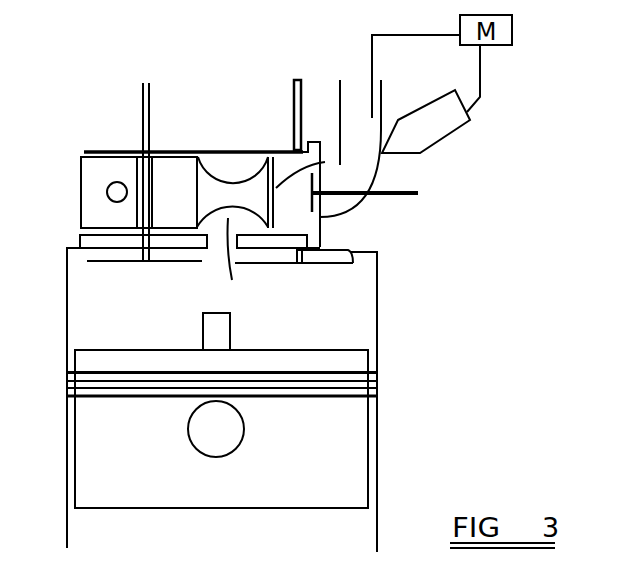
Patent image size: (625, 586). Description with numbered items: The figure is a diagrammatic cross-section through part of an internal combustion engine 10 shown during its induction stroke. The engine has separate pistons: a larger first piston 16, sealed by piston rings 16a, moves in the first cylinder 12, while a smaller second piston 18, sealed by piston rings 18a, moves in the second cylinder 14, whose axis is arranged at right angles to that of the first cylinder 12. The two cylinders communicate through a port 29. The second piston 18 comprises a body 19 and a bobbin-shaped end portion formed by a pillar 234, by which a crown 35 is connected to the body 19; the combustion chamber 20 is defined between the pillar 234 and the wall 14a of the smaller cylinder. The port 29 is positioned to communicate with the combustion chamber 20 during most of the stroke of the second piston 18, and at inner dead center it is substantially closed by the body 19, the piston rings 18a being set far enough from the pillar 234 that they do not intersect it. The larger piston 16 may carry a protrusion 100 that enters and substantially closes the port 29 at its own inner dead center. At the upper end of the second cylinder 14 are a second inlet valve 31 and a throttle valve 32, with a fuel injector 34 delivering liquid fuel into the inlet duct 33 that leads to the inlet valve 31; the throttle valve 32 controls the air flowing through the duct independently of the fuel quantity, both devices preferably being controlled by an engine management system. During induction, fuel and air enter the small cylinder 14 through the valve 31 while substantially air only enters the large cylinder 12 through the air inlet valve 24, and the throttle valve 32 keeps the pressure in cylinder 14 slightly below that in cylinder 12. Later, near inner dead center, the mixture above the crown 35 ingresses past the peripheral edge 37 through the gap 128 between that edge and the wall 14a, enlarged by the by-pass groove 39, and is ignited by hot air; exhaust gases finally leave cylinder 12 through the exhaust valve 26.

The internal combustion engine 10 is at (455, 374).
The first cylinder 12 is at (360, 320).
The second cylinder 14 is at (283, 148).
The wall of the smaller cylinder 14a is at (284, 231).
The first piston 16 is at (352, 457).
The piston rings 16a is at (367, 403).
The second piston 18 is at (176, 170).
The piston rings 18a is at (142, 152).
The body 19 is at (163, 168).
The combustion chamber 20 is at (245, 263).
The air inlet valve 24 is at (353, 252).
The exhaust valve 26 is at (98, 257).
The port 29 is at (212, 242).
The second inlet valve 31 is at (405, 192).
The throttle valve 32 is at (372, 118).
The inlet duct 33 is at (377, 100).
The fuel injector 34 is at (458, 119).
The crown 35 is at (324, 165).
The peripheral edge 37 is at (268, 237).
The by-pass groove 39 is at (308, 142).
The protrusion 100 is at (203, 333).
The gap 128 is at (268, 148).
The pillar 234 is at (230, 186).